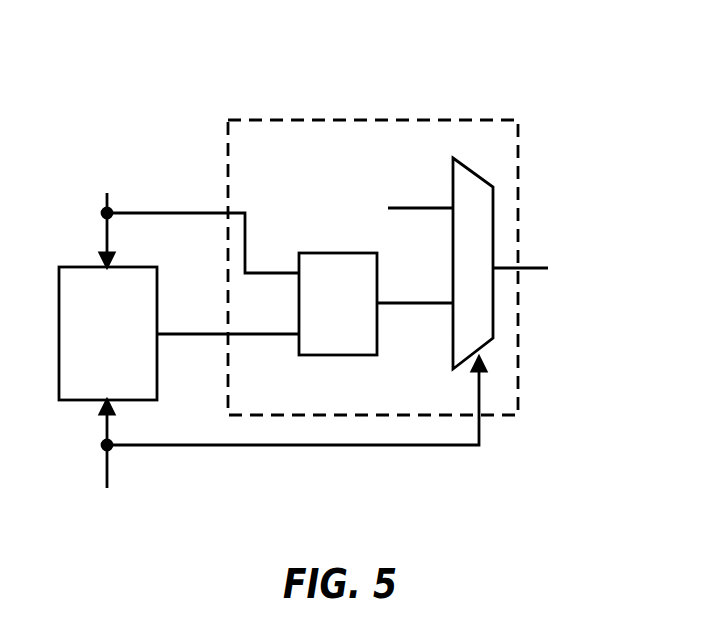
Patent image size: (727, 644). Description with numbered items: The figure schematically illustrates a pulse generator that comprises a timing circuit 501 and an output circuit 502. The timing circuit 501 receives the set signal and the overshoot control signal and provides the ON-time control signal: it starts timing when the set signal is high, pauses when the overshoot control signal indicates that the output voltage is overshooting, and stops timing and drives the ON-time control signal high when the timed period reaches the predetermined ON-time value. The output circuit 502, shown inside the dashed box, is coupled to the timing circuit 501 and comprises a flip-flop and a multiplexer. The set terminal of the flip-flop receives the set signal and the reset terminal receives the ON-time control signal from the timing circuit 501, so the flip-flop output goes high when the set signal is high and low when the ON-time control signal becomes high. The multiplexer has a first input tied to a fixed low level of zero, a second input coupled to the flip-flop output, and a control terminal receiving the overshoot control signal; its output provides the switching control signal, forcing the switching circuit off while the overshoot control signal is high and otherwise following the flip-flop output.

The timing circuit 501 is at (68, 252).
The output circuit 502 is at (518, 121).